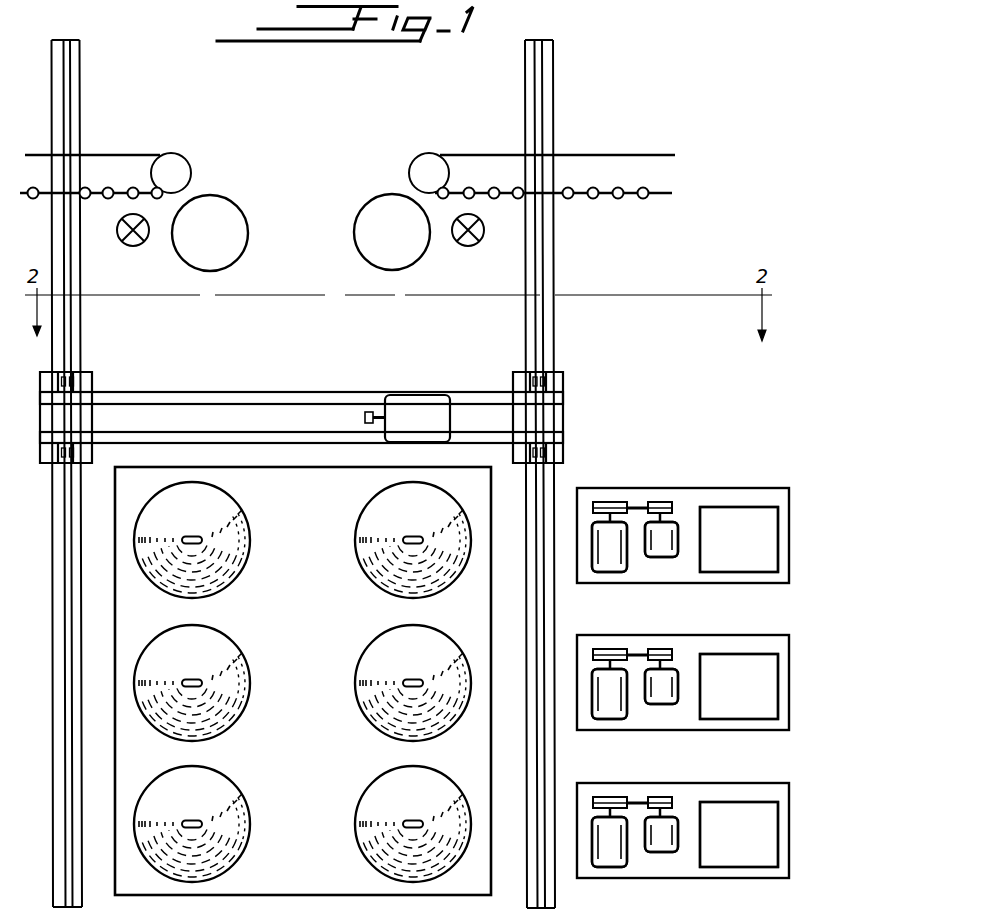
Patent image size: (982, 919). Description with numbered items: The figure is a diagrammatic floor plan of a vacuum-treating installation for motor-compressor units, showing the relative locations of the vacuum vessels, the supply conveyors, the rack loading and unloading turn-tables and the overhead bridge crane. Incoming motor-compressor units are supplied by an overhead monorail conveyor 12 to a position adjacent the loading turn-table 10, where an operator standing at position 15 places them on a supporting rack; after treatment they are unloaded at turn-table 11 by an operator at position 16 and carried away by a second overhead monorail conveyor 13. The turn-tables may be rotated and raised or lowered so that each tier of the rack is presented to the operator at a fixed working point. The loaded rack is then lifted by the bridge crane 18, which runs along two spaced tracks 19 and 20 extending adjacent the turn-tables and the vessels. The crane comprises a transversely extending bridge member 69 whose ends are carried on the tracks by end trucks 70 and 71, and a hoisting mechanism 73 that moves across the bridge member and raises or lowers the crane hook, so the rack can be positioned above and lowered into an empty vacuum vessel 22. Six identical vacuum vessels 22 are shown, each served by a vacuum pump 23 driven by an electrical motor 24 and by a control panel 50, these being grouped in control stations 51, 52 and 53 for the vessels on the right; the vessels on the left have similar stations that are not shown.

The turn-table 10 is at (412, 262).
The turn-table 11 is at (233, 258).
The overhead monorail conveyor 12 is at (468, 155).
The overhead monorail conveyor 13 is at (122, 155).
The operator position 15 is at (468, 245).
The operator position 16 is at (133, 245).
The bridge crane 18 is at (320, 380).
The track 19 is at (82, 347).
The track 20 is at (540, 323).
The vacuum vessel 22 is at (232, 517).
The vacuum pump 23 is at (608, 570).
The electrical motor 24 is at (658, 555).
The main control panel 50 is at (722, 515).
The control station 51 is at (655, 492).
The control station 52 is at (655, 639).
The control station 53 is at (655, 787).
The bridge member 69 is at (168, 395).
The end truck 70 is at (92, 379).
The end truck 71 is at (565, 381).
The hoisting mechanism 73 is at (410, 402).